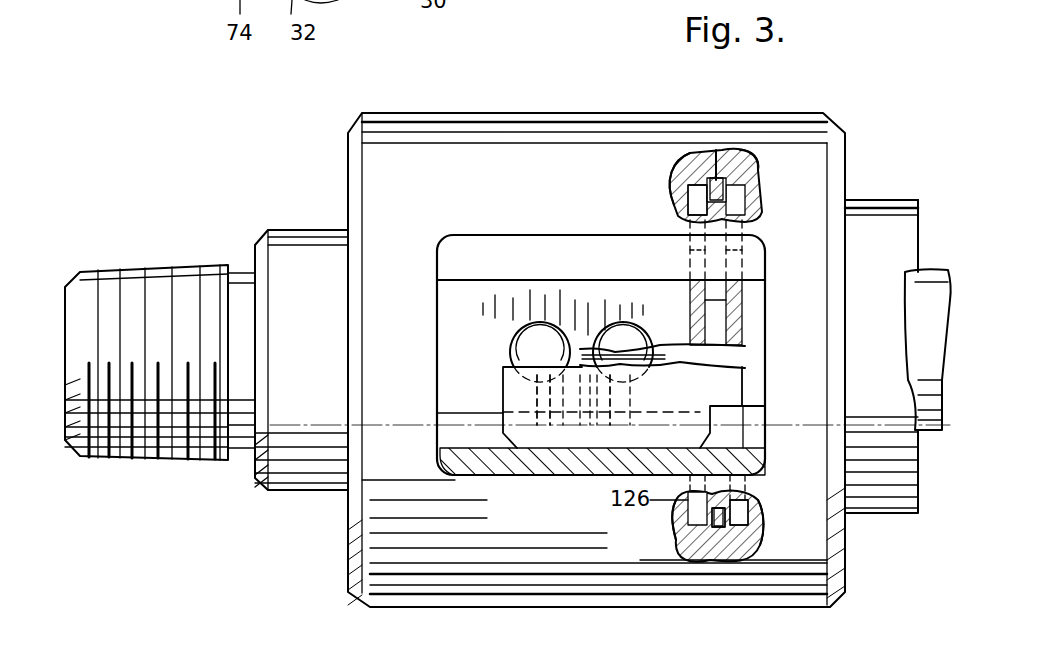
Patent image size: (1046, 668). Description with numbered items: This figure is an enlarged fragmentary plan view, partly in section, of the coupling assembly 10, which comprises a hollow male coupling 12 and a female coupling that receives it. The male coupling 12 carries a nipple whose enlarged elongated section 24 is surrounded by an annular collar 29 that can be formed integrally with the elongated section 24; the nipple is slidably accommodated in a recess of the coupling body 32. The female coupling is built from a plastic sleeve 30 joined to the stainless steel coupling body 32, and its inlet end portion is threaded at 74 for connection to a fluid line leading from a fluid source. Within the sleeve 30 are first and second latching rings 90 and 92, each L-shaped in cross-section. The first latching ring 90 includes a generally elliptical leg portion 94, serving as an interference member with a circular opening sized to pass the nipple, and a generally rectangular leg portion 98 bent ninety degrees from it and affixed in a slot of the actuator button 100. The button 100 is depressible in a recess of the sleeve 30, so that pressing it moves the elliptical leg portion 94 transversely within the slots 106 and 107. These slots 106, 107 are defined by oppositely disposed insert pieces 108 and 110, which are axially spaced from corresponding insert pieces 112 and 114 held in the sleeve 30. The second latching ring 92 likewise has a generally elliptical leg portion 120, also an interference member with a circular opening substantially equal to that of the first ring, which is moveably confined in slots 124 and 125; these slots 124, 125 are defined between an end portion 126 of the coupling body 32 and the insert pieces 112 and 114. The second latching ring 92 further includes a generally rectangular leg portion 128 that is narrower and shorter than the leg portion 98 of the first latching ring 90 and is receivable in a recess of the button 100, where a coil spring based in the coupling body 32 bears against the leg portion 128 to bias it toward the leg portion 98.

The coupling assembly 10 is at (533, 96).
The male coupling 12 is at (873, 195).
The enlarged elongated section 24 is at (937, 268).
The annular collar 29 is at (910, 195).
The sleeve 30 is at (398, 113).
The coupling body 32 is at (283, 230).
The thread 74 is at (155, 270).
The first latching ring 90 is at (562, 445).
The second latching ring 92 is at (656, 408).
The elliptical leg portion 94 is at (752, 497).
The rectangular leg portion 98 is at (522, 445).
The actuator button 100 is at (512, 233).
The slot 106 is at (724, 166).
The slot 107 is at (760, 530).
The insert piece 108 is at (756, 170).
The insert piece 110 is at (760, 515).
The insert piece 112 is at (716, 180).
The insert piece 114 is at (690, 532).
The elliptical leg portion 120 is at (693, 210).
The slot 124 is at (672, 182).
The slot 125 is at (688, 520).
The end portion 126 is at (686, 197).
The rectangular leg portion 128 is at (613, 400).